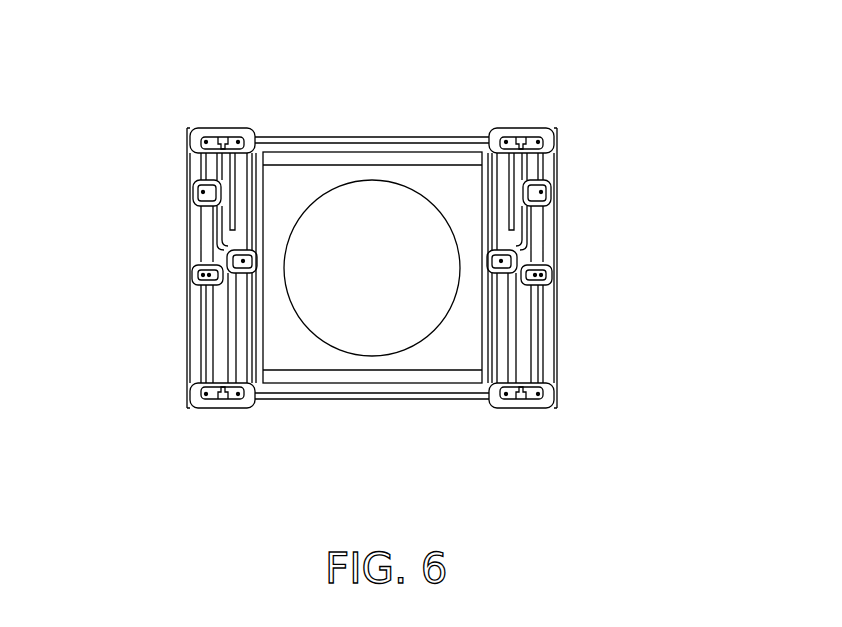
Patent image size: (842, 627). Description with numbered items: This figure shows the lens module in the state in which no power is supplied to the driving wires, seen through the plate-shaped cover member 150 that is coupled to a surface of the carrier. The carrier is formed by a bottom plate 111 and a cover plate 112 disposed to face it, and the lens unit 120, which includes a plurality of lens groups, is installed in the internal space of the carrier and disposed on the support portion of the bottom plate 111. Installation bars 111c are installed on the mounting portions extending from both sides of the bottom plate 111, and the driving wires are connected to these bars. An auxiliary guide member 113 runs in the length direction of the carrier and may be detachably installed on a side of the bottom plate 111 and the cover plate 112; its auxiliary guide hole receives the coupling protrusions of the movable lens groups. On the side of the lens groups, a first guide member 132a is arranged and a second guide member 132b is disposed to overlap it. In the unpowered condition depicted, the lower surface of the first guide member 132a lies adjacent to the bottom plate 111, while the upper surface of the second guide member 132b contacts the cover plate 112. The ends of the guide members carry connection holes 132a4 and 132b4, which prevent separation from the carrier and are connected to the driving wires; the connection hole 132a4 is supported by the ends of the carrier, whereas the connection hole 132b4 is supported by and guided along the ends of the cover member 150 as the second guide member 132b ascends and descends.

The bottom plate 111 is at (372, 395).
The installation bar 111c is at (231, 130).
The cover plate 112 is at (318, 137).
The auxiliary guide member 113 is at (258, 310).
The lens unit 120 is at (421, 177).
The first guide member 132a is at (236, 320).
The connection hole 132a4 is at (192, 271).
The second guide member 132b is at (203, 232).
The connection hole 132b4 is at (193, 190).
The cover member 150 is at (195, 303).